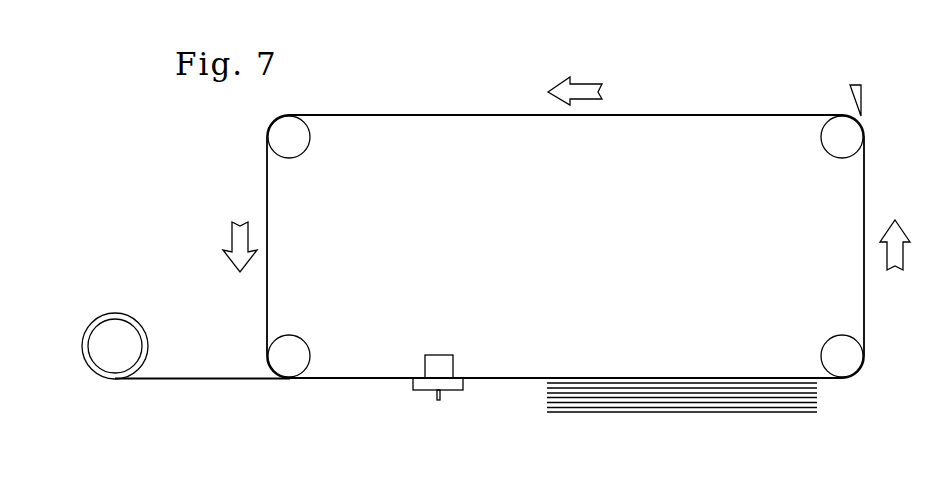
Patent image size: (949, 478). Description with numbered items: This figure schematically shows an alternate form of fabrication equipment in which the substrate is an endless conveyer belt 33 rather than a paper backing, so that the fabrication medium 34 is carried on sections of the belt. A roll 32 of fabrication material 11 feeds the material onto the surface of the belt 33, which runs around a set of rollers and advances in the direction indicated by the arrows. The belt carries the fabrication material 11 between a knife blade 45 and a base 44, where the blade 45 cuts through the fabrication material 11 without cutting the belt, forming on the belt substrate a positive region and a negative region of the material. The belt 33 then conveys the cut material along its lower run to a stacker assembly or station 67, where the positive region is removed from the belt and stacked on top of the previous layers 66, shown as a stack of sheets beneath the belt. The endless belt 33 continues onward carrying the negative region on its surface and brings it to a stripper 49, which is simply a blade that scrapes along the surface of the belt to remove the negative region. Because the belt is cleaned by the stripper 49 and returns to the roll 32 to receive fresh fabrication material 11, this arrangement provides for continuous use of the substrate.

The fabrication material 11 is at (202, 390).
The roll 32 is at (97, 315).
The endless conveyer belt 33 is at (683, 120).
The fabrication medium 34 is at (526, 373).
The base 44 is at (435, 352).
The knife blade 45 is at (437, 400).
The stripper 49 is at (850, 80).
The previous layers 66 is at (628, 412).
The stacker assembly or station 67 is at (698, 370).